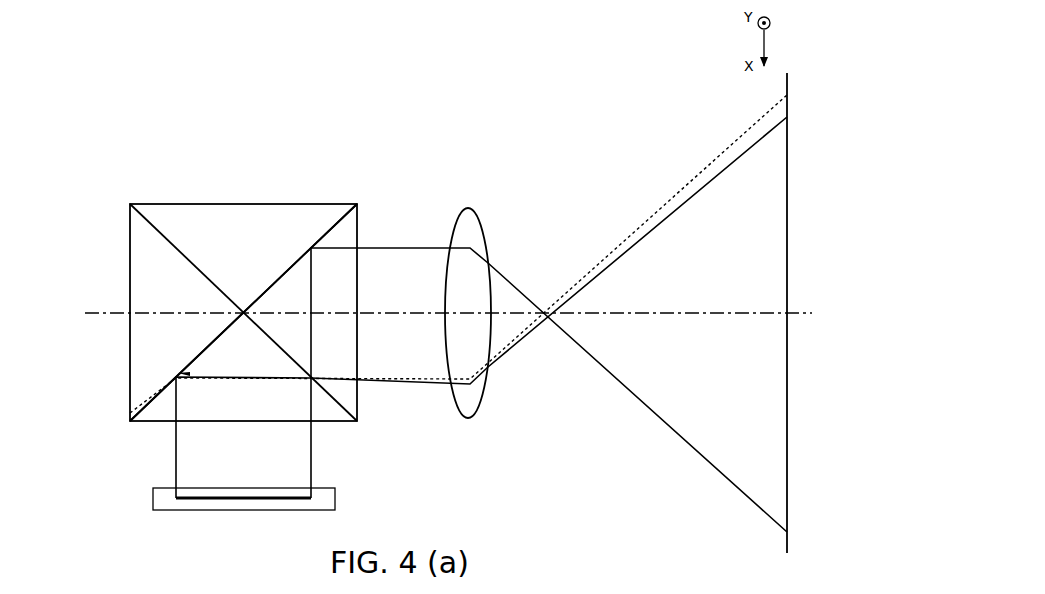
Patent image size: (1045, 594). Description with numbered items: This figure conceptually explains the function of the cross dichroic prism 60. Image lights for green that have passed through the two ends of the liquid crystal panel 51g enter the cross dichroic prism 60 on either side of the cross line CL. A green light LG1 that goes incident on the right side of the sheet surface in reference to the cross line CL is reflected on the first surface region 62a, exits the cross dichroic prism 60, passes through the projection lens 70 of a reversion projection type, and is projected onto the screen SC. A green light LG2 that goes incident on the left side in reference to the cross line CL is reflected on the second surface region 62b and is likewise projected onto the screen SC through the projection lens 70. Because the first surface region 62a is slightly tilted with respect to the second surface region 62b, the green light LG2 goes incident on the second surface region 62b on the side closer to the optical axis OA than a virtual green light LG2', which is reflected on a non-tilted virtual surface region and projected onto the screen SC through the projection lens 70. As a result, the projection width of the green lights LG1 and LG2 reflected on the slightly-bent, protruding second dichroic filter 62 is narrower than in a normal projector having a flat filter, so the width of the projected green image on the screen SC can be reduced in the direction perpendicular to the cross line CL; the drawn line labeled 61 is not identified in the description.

The cross dichroic prism 60 is at (348, 197).
The first dichroic film 61 is at (188, 241).
The second dichroic filter 62 is at (311, 243).
The first surface region 62a is at (284, 271).
The second surface region 62b is at (153, 390).
The cross line CL is at (243, 306).
The projection lens 70 is at (468, 207).
The optical axis OA is at (691, 315).
The screen SC is at (785, 538).
The green light LG1 is at (312, 452).
The green light LG2 is at (426, 305).
The virtual green light LG2' is at (458, 254).
The liquid crystal panel 51g is at (335, 498).